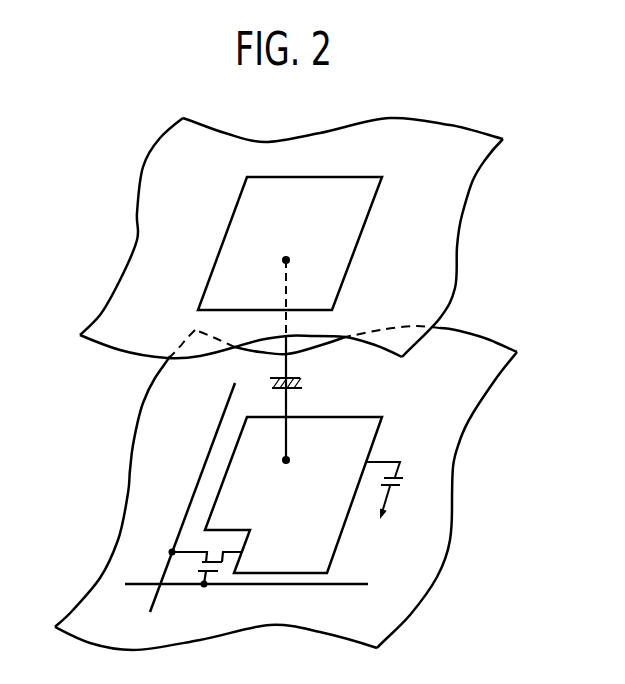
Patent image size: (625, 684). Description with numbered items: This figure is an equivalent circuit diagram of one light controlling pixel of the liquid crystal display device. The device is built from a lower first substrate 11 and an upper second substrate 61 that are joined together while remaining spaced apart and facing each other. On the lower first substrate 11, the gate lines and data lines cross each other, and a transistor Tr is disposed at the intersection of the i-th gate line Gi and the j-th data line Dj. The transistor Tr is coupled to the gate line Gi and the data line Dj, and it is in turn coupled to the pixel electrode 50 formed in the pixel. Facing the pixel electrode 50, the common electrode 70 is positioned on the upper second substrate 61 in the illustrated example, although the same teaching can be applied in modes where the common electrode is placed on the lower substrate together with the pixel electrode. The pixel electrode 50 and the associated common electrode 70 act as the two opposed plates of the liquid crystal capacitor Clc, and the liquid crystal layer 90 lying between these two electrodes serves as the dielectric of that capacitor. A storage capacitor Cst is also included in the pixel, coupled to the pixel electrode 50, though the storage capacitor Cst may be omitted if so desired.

The liquid crystal layer 90 is at (112, 390).
The second substrate 61 is at (458, 288).
The common electrode 70 is at (378, 193).
The first substrate 11 is at (472, 417).
The pixel electrode 50 is at (343, 530).
The liquid crystal capacitor Clc is at (302, 360).
The storage capacitor Cst is at (399, 490).
The j-th data line Dj is at (195, 482).
The i-th gate line Gi is at (246, 569).
The transistor Tr is at (206, 586).